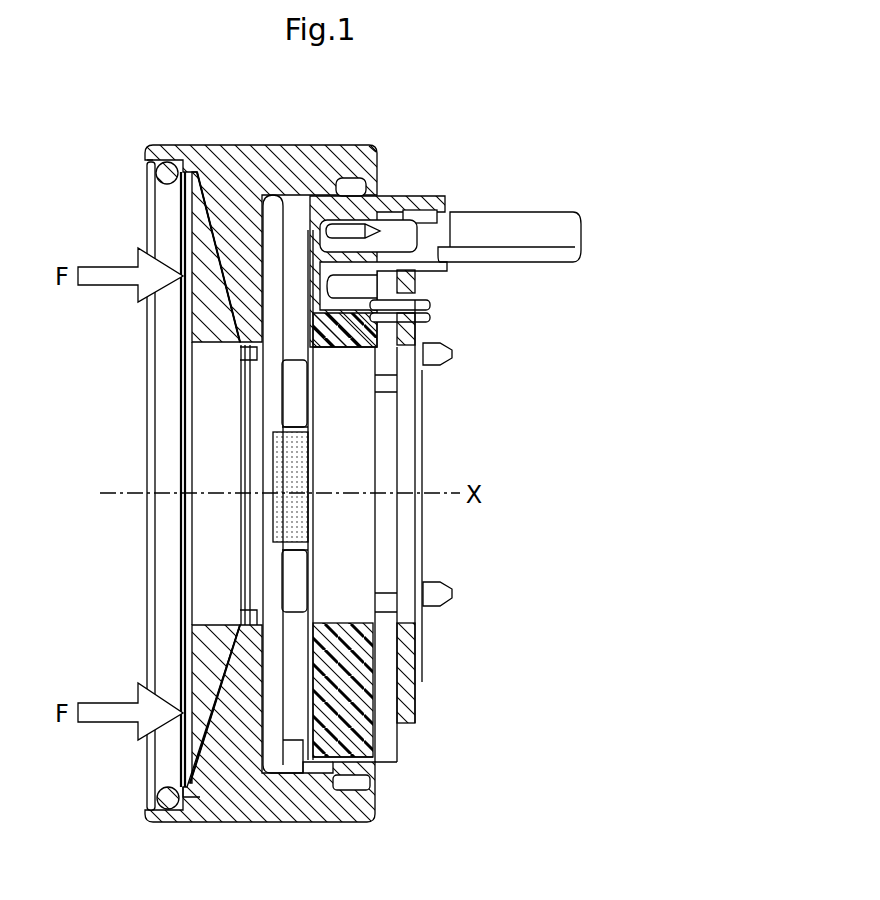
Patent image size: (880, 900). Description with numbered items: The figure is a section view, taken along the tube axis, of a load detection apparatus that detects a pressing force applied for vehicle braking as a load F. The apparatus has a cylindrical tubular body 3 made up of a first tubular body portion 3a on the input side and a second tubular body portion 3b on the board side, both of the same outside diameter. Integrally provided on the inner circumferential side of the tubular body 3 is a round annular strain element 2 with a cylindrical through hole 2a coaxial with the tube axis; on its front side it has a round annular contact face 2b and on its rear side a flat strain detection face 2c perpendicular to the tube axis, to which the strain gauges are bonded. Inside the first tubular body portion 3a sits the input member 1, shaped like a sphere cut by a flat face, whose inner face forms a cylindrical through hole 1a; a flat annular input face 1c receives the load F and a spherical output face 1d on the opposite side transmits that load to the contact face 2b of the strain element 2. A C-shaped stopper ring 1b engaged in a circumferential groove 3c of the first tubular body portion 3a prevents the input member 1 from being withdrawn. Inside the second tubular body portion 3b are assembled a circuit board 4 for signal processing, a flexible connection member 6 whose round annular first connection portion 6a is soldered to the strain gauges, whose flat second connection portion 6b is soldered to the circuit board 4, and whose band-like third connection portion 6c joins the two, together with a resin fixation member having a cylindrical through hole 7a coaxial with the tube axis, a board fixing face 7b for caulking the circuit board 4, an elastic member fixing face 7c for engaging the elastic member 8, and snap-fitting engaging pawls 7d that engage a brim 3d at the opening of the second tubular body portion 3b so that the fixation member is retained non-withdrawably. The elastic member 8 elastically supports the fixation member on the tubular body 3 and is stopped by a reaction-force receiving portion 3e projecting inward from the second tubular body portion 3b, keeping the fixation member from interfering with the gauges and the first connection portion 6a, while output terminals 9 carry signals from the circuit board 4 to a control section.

The input member 1 is at (200, 328).
The through hole 1a is at (200, 456).
The stopper ring 1b is at (165, 586).
The input face 1c is at (178, 670).
The output face 1d is at (243, 789).
The strain element 2 is at (243, 244).
The through hole 2a is at (255, 405).
The contact face 2b is at (212, 238).
The strain detection face 2c is at (298, 323).
The tubular body 3 is at (264, 143).
The first tubular body portion 3a is at (157, 142).
The second tubular body portion 3b is at (362, 147).
The circumferential groove 3c is at (158, 792).
The brim 3d is at (380, 783).
The reaction-force receiving portion 3e is at (318, 776).
The circuit board 4 is at (410, 450).
The connection member 6 is at (425, 535).
The first connection portion 6a is at (275, 650).
The second connection portion 6b is at (422, 650).
The third connection portion 6c is at (308, 474).
The through hole 7a is at (382, 426).
The board fixing face 7b is at (397, 560).
The elastic member fixing face 7c is at (265, 501).
The engaging pawls 7d is at (288, 210).
The elastic member 8 is at (317, 688).
The output terminals 9 is at (548, 213).